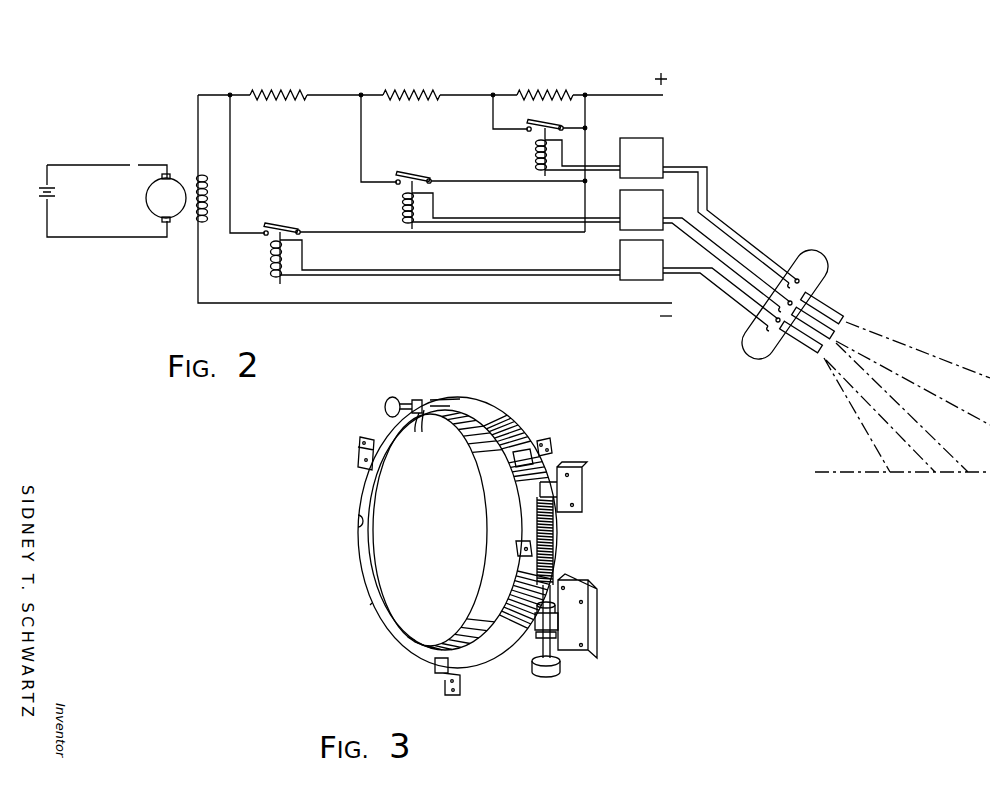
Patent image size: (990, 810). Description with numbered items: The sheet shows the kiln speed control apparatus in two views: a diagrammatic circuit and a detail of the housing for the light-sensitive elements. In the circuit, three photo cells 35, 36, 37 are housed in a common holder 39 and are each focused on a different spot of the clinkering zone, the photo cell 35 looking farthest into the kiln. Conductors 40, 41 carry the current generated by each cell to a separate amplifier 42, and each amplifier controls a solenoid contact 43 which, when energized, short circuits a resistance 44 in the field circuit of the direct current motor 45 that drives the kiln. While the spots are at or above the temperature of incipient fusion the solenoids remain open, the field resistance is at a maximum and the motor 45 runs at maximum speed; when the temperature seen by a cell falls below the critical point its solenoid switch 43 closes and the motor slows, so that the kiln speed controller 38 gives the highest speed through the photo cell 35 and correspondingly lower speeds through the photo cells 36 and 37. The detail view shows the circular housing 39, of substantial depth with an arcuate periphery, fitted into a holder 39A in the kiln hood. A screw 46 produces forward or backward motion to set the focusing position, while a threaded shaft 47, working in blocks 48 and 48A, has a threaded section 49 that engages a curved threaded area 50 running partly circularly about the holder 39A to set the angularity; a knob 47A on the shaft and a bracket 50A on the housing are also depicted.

In FIG. 2, the photo cell 35 is at (833, 303).
In FIG. 2, the photo cell 36 is at (834, 329).
In FIG. 2, the photo cell 37 is at (807, 354).
In FIG. 2, the kiln speed controller 38 is at (432, 165).
In FIG. 2, the holder 39 is at (820, 253).
In FIG. 3, the holder 39 is at (336, 553).
In FIG. 3, the holder 39A is at (371, 604).
In FIG. 2, the conductor 40 is at (727, 240).
In FIG. 2, the conductor 41 is at (757, 251).
In FIG. 2, the amplifier 42 is at (667, 157).
In FIG. 2, the solenoid contact 43 is at (538, 156).
In FIG. 2, the resistance 44 is at (544, 90).
In FIG. 2, the direct current motor 45 is at (177, 178).
In FIG. 3, the screw 46 is at (397, 396).
In FIG. 3, the threaded shaft 47 is at (553, 652).
In FIG. 3, the knob 47A is at (548, 678).
In FIG. 3, the block 48 is at (599, 632).
In FIG. 3, the block 48A is at (583, 485).
In FIG. 3, the threaded section 49 is at (553, 557).
In FIG. 3, the curved and threaded area 50 is at (527, 426).
In FIG. 3, the bracket 50A is at (356, 447).